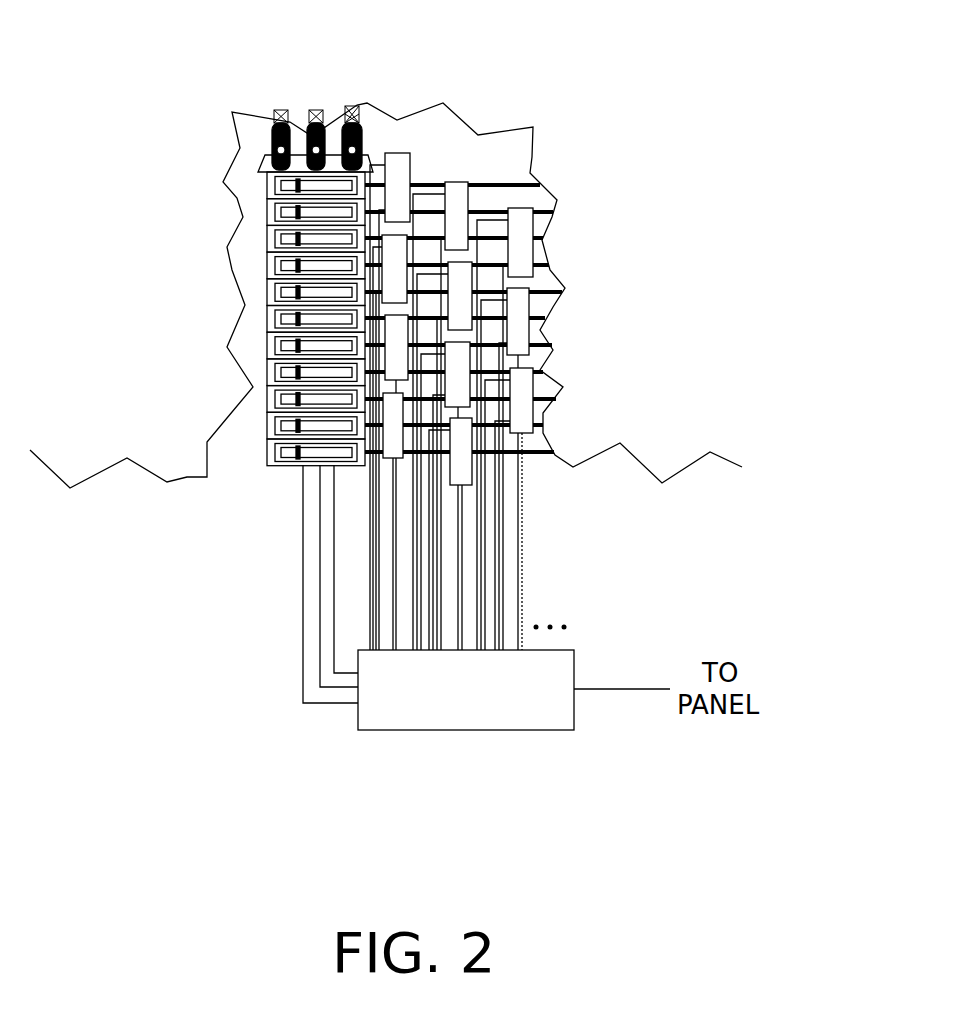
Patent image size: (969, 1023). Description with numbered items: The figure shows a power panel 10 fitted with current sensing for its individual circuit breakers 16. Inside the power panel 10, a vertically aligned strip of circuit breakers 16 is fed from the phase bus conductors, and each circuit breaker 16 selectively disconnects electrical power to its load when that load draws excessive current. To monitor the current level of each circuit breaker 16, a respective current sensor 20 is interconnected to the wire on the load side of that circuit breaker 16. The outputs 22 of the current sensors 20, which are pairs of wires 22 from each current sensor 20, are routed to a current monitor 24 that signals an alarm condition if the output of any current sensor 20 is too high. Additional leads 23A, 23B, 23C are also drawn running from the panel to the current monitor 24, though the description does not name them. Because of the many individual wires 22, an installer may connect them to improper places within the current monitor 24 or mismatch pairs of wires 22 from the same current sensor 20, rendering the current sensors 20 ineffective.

The power panel enclosure 10 is at (590, 87).
The circuit breakers 16 is at (267, 452).
The current sensor 20 is at (397, 282).
The outputs 22 is at (430, 507).
The phase A voltage lead 23A is at (303, 545).
The phase B voltage lead 23B is at (320, 588).
The phase C voltage lead 23C is at (334, 628).
The current monitor 24 is at (525, 732).